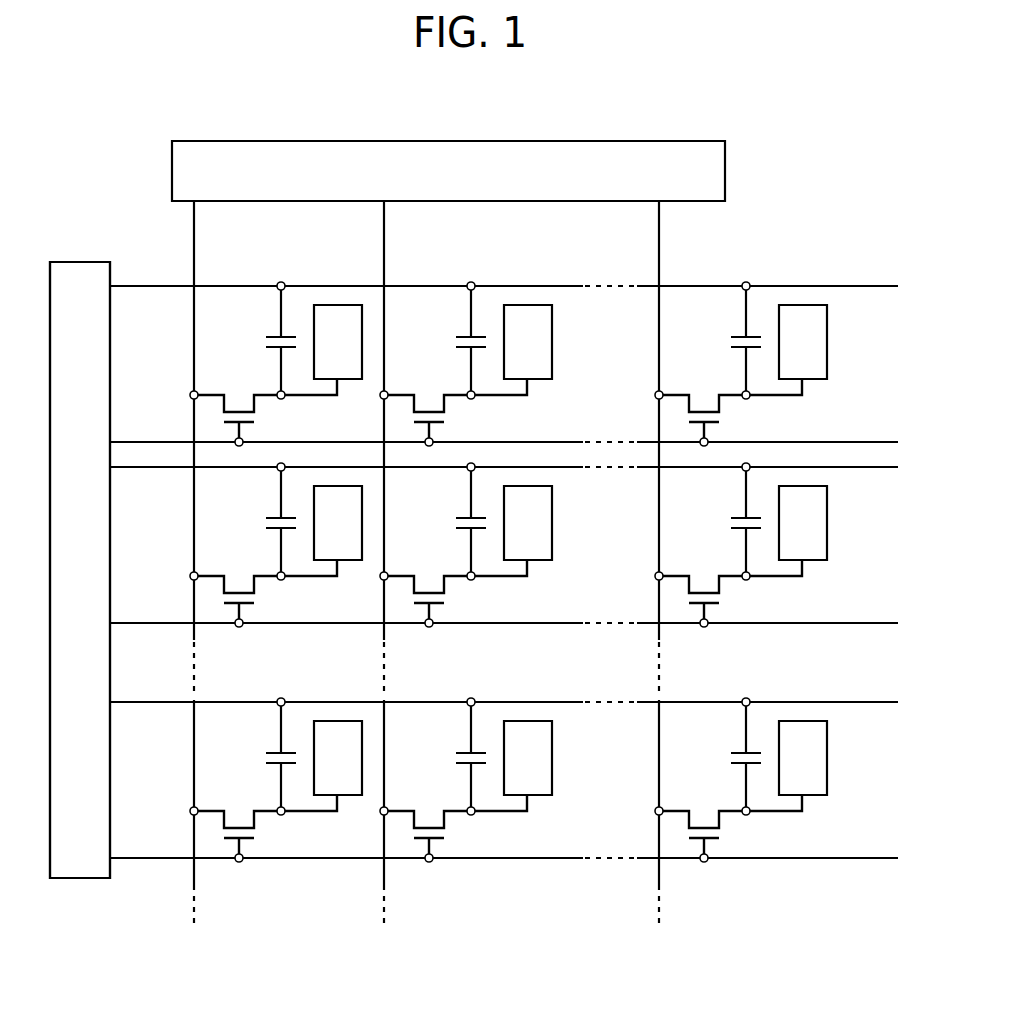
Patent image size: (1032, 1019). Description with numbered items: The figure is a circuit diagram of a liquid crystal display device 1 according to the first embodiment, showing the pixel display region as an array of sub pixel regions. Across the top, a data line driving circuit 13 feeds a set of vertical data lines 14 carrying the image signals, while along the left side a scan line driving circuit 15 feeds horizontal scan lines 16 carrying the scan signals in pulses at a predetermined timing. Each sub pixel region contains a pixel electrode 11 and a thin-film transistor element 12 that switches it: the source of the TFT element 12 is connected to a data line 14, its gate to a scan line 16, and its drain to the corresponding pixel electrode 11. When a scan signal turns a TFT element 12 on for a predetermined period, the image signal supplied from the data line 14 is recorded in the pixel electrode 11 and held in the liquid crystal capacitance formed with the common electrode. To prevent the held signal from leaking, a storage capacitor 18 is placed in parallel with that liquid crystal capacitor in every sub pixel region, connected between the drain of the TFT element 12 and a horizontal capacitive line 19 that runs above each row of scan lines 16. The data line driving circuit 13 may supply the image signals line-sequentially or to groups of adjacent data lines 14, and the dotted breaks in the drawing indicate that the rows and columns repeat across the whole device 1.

The liquid crystal display device 1 is at (832, 187).
The pixel electrode 11 is at (822, 346).
The thin-film transistor element 12 is at (256, 421).
The data line driving circuit 13 is at (172, 163).
The data line 14 is at (693, 255).
The scan line driving circuit 15 is at (80, 262).
The scan line 16 is at (183, 858).
The storage capacitor 18 is at (263, 341).
The capacitive line 19 is at (153, 702).